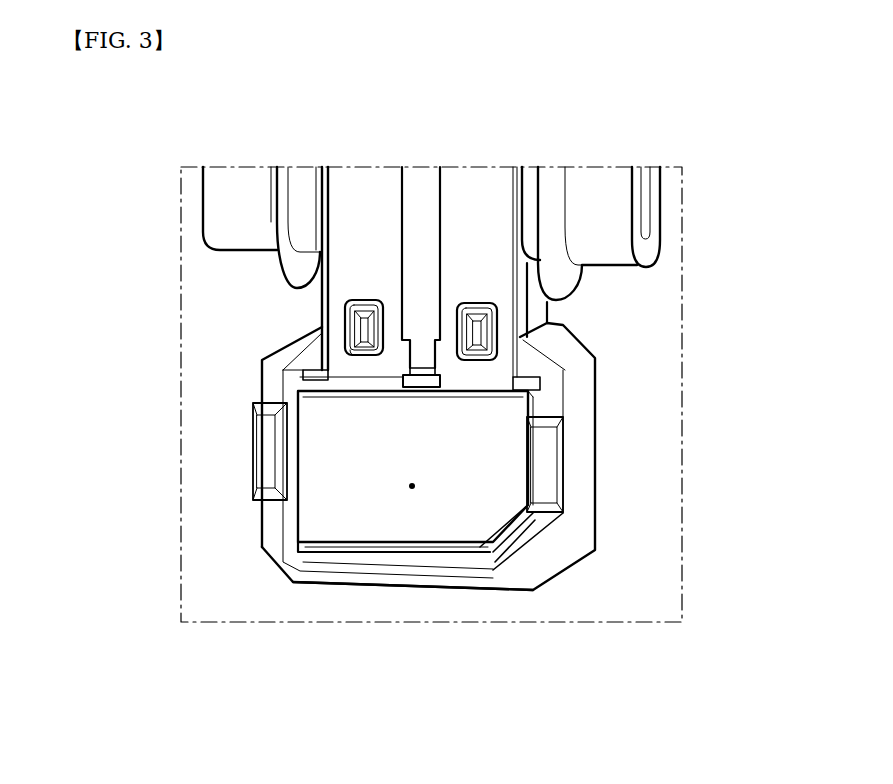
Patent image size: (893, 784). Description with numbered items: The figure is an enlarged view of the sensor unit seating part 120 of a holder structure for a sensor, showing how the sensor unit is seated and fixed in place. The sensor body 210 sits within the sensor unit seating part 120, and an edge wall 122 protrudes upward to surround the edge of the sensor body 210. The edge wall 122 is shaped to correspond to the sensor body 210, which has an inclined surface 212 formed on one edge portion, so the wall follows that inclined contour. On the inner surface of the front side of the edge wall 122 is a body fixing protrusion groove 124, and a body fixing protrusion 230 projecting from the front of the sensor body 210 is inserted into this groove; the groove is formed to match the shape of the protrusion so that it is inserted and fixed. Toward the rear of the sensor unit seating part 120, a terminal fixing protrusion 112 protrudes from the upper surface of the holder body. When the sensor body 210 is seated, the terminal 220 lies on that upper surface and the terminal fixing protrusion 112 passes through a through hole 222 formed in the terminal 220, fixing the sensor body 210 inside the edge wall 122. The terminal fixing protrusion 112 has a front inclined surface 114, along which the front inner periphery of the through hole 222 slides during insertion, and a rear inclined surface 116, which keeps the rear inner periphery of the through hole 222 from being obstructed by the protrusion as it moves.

The terminal fixing protrusion 112 is at (339, 325).
The front inclined surface 114 is at (352, 354).
The rear inclined surface 116 is at (347, 300).
The sensor unit seating part 120 is at (257, 523).
The edge wall 122 is at (555, 538).
The body fixing protrusion groove 124 is at (400, 542).
The sensor body 210 is at (507, 450).
The inclined surface 212 is at (548, 518).
The terminal 220 is at (370, 198).
The through hole 222 is at (497, 305).
The body fixing protrusion 230 is at (433, 552).